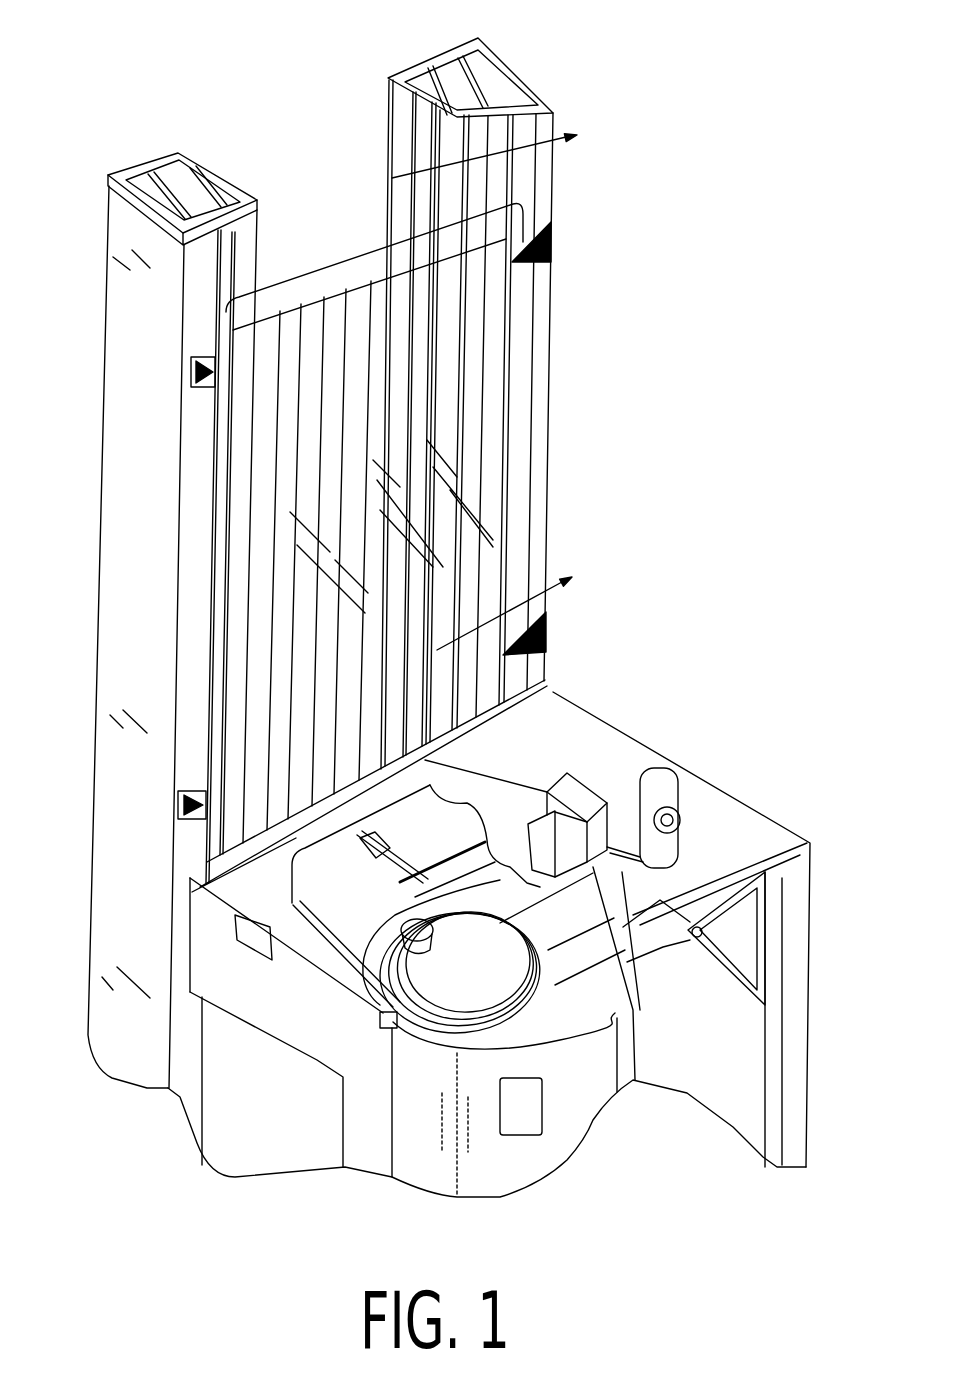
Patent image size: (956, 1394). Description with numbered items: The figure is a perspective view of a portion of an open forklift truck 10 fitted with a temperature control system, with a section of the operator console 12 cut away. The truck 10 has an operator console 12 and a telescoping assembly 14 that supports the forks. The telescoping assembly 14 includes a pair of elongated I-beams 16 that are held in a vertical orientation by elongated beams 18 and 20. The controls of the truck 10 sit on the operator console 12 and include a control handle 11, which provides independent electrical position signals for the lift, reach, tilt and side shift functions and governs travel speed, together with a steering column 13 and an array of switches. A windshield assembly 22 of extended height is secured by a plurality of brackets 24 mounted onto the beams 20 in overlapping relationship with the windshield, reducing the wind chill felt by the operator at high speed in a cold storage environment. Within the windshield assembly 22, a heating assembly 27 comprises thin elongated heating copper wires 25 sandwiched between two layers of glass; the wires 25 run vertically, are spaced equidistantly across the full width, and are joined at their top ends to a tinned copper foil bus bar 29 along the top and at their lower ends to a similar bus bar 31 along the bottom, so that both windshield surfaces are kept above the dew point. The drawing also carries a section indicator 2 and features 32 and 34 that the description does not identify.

The forklift truck 10 is at (657, 267).
The control handle 11 is at (672, 809).
The operator console 12 is at (657, 729).
The steering column 13 is at (523, 929).
The telescoping assembly 14 is at (205, 103).
The elongated I-beams 16 is at (218, 160).
The elongated beam 18 is at (241, 190).
The elongated beam 20 is at (153, 215).
The windshield assembly 22 is at (325, 262).
The brackets 24 is at (555, 225).
The heating copper wires 25 is at (358, 283).
The heating assembly 27 is at (520, 384).
The bus bar 29 is at (297, 300).
The bus bar 31 is at (321, 808).
The channel housing 32 is at (602, 730).
The clip 34 is at (248, 950).
The section line 2 is at (495, 381).